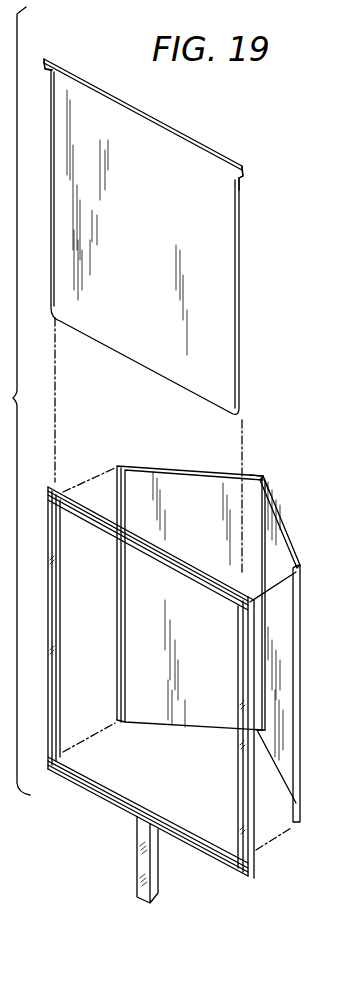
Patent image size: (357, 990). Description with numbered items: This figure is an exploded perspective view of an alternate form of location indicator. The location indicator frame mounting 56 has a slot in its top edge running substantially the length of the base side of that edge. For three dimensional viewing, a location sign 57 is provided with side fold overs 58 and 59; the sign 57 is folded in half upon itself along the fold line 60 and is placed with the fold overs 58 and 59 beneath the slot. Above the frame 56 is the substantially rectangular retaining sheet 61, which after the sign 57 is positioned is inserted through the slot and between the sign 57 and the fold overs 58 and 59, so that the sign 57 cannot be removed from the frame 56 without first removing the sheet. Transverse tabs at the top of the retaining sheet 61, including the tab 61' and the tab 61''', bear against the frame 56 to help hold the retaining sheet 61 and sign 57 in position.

The location indicator frame mounting 56 is at (248, 865).
The location sign 57 is at (285, 522).
The side fold over 58 is at (113, 470).
The side fold over 59 is at (294, 600).
The fold line 60 is at (264, 476).
The retaining sheet 61 is at (143, 236).
The transverse tab 61' is at (62, 48).
The right end of top panel 61''' is at (271, 178).